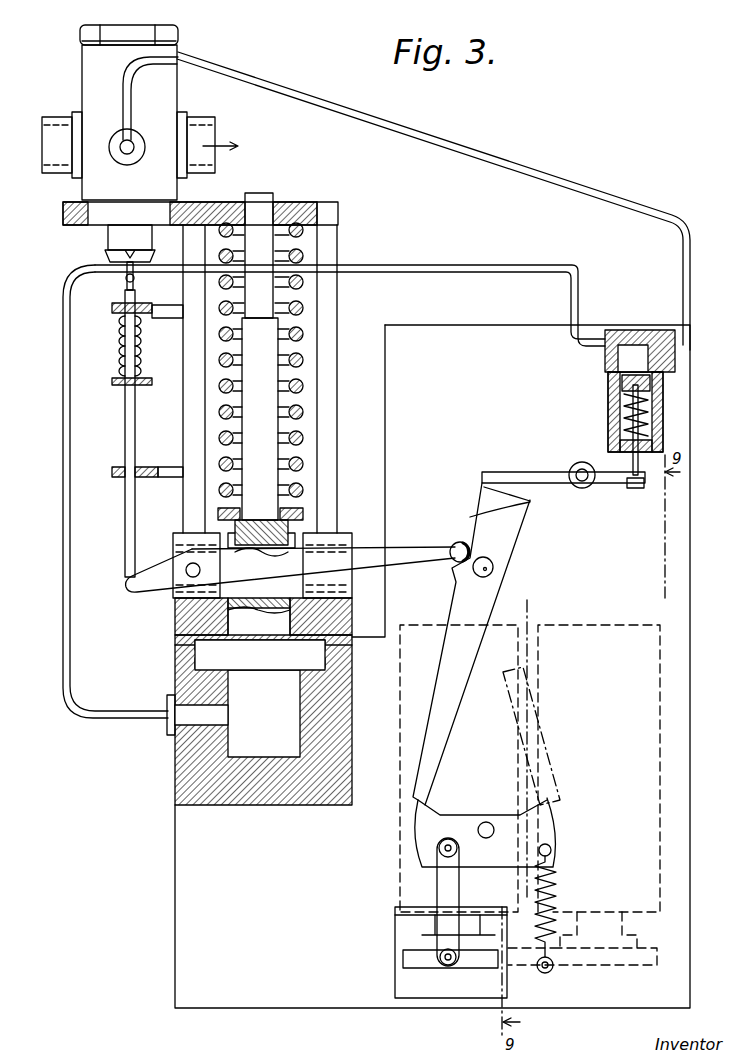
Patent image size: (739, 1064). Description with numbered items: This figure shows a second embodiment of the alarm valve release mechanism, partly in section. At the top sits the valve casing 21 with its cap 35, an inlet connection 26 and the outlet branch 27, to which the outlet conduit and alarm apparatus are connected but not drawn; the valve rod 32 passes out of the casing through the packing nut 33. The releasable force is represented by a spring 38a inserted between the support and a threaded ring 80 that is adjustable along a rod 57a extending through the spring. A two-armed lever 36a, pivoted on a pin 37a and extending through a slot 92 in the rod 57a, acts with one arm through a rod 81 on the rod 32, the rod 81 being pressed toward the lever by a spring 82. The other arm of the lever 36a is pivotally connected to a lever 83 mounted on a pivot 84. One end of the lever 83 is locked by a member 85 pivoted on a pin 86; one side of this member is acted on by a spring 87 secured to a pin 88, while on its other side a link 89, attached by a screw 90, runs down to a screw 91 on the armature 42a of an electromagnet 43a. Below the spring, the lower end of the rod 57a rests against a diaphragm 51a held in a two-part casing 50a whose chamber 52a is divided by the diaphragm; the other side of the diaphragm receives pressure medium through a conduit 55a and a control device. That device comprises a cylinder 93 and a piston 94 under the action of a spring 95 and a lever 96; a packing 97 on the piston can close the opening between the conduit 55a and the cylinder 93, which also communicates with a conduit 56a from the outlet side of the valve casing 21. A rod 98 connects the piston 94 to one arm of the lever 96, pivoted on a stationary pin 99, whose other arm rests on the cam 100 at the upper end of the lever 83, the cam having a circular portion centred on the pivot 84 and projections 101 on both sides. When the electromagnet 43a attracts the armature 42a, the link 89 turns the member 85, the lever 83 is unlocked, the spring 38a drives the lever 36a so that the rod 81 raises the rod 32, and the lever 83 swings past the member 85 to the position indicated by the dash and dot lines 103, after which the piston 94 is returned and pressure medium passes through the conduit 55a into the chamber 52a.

The valve casing 21 is at (162, 91).
The inlet connection 26 is at (52, 131).
The outlet branch 27 is at (204, 133).
The rod 32 is at (125, 278).
The packing nut 33 is at (116, 256).
The cap 35 is at (175, 33).
The lever 36a is at (368, 558).
The pin 37a is at (170, 590).
The spring 38a is at (326, 311).
The armature 42a is at (472, 962).
The electromagnet 43a is at (432, 940).
The casing 50a is at (185, 648).
The diaphragm 51a is at (215, 664).
The chamber 52a is at (242, 738).
The conduit 55a is at (415, 264).
The conduit 56a is at (442, 139).
The rod 57a is at (276, 390).
The threaded ring 80 is at (300, 512).
The rod 81 is at (126, 431).
The spring 82 is at (113, 361).
The lever 83 is at (487, 648).
The pivot 84 is at (496, 571).
The member 85 is at (427, 831).
The pin 86 is at (483, 822).
The spring 87 is at (553, 891).
The pin 88 is at (551, 969).
The link 89 is at (440, 883).
The screw 90 is at (456, 856).
The screw 91 is at (435, 955).
The slot 92 is at (322, 568).
The cylinder 93 is at (612, 374).
The piston 94 is at (616, 390).
The spring 95 is at (616, 405).
The lever 96 is at (546, 476).
The packing 97 is at (606, 362).
The rod 98 is at (635, 490).
The pin 99 is at (582, 489).
The cam 100 is at (477, 503).
The projections 101 is at (478, 519).
The dash and dot lines 103 is at (547, 751).